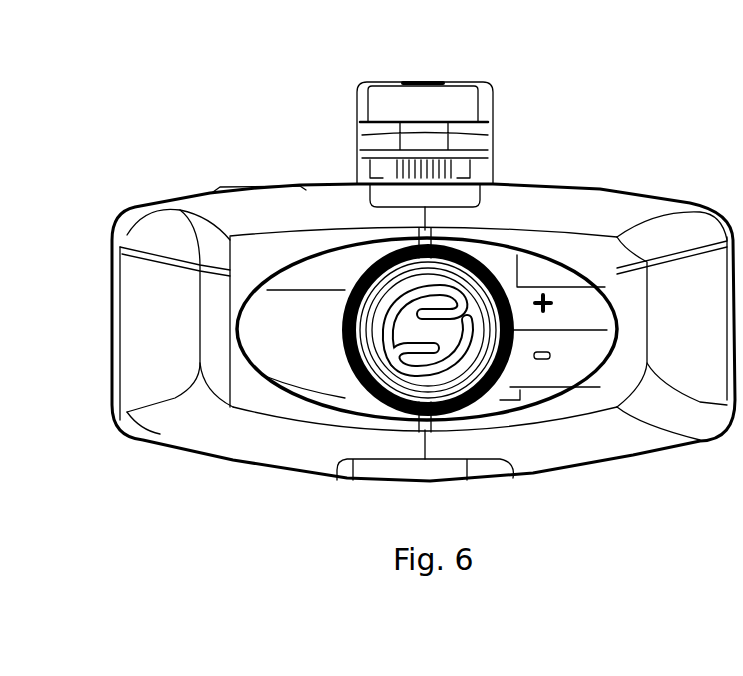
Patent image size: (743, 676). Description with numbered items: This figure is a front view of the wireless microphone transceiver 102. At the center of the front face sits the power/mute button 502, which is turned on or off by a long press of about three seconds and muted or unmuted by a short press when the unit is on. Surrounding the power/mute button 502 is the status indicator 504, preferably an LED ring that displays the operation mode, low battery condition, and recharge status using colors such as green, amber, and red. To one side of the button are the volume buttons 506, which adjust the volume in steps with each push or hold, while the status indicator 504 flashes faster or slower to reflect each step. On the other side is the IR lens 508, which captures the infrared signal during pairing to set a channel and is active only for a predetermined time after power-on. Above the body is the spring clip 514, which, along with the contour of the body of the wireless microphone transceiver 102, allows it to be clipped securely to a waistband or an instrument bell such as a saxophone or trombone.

The wireless microphone transceiver 102 is at (642, 175).
The spring clip 514 is at (450, 93).
The IR lens 508 is at (281, 320).
The status indicator 504 is at (345, 368).
The power/mute button 502 is at (433, 353).
The volume buttons 506 is at (562, 357).